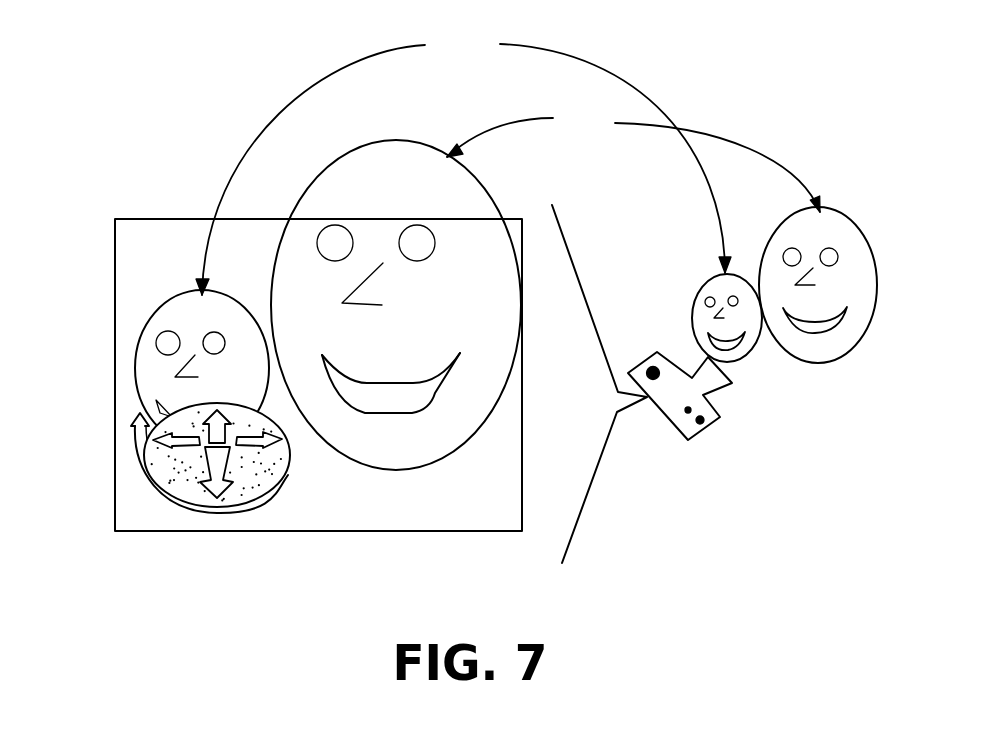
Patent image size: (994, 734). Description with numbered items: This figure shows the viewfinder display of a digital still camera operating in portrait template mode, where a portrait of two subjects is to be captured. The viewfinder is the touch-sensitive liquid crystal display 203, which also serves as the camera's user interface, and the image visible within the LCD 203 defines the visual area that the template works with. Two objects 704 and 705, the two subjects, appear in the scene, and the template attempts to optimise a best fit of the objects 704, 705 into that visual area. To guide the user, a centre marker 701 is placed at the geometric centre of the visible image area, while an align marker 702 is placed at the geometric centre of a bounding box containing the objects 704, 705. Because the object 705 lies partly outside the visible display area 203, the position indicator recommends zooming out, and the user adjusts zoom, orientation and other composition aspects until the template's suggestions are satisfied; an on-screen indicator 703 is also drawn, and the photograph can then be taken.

The liquid crystal display 203 is at (113, 280).
The centre marker 701 is at (320, 400).
The align marker 702 is at (337, 327).
The motion control indicator 703 is at (202, 493).
The object 704 is at (463, 163).
The object 705 is at (633, 160).